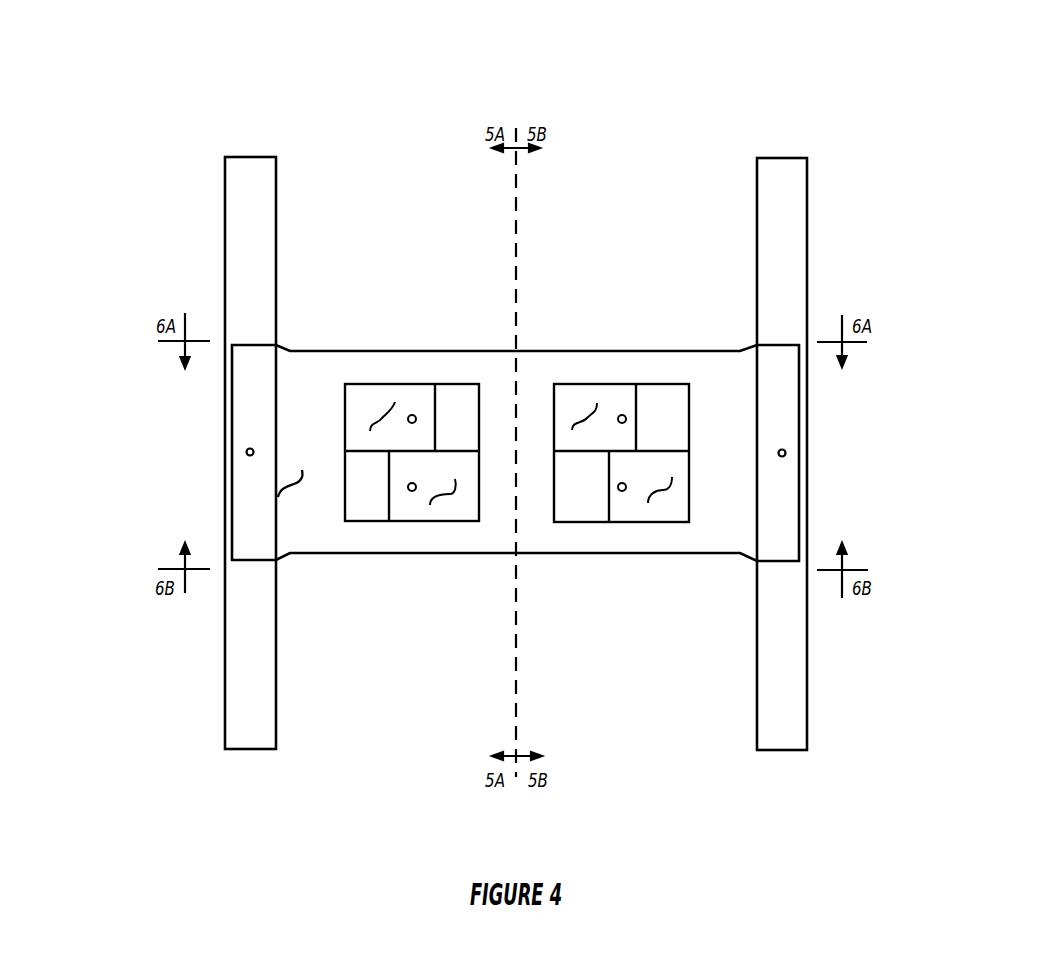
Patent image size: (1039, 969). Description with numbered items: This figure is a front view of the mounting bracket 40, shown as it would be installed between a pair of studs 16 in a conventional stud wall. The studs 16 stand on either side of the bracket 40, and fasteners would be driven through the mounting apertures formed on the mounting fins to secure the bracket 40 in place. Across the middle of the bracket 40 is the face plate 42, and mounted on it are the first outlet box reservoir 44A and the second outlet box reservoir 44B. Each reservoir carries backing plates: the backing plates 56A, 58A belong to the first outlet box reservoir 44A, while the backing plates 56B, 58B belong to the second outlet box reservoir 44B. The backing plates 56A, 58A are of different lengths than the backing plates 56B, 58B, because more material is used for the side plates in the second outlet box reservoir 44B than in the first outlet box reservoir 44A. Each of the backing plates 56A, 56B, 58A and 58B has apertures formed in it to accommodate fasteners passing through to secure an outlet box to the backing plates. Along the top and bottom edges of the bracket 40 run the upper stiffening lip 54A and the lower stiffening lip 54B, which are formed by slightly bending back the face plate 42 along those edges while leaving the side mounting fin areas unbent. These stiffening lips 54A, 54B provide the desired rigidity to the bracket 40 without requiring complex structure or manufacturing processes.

The stud 16 is at (224, 279).
The mounting bracket 40 is at (645, 176).
The face plate 42 is at (295, 483).
The first outlet box reservoir 44A is at (380, 530).
The second outlet box reservoir 44B is at (714, 422).
The upper stiffening lip 54A is at (450, 326).
The lower stiffening lip 54B is at (562, 576).
The backing plate 56A is at (382, 418).
The backing plate 56B is at (583, 415).
The backing plate 58A is at (450, 494).
The backing plate 58B is at (663, 490).